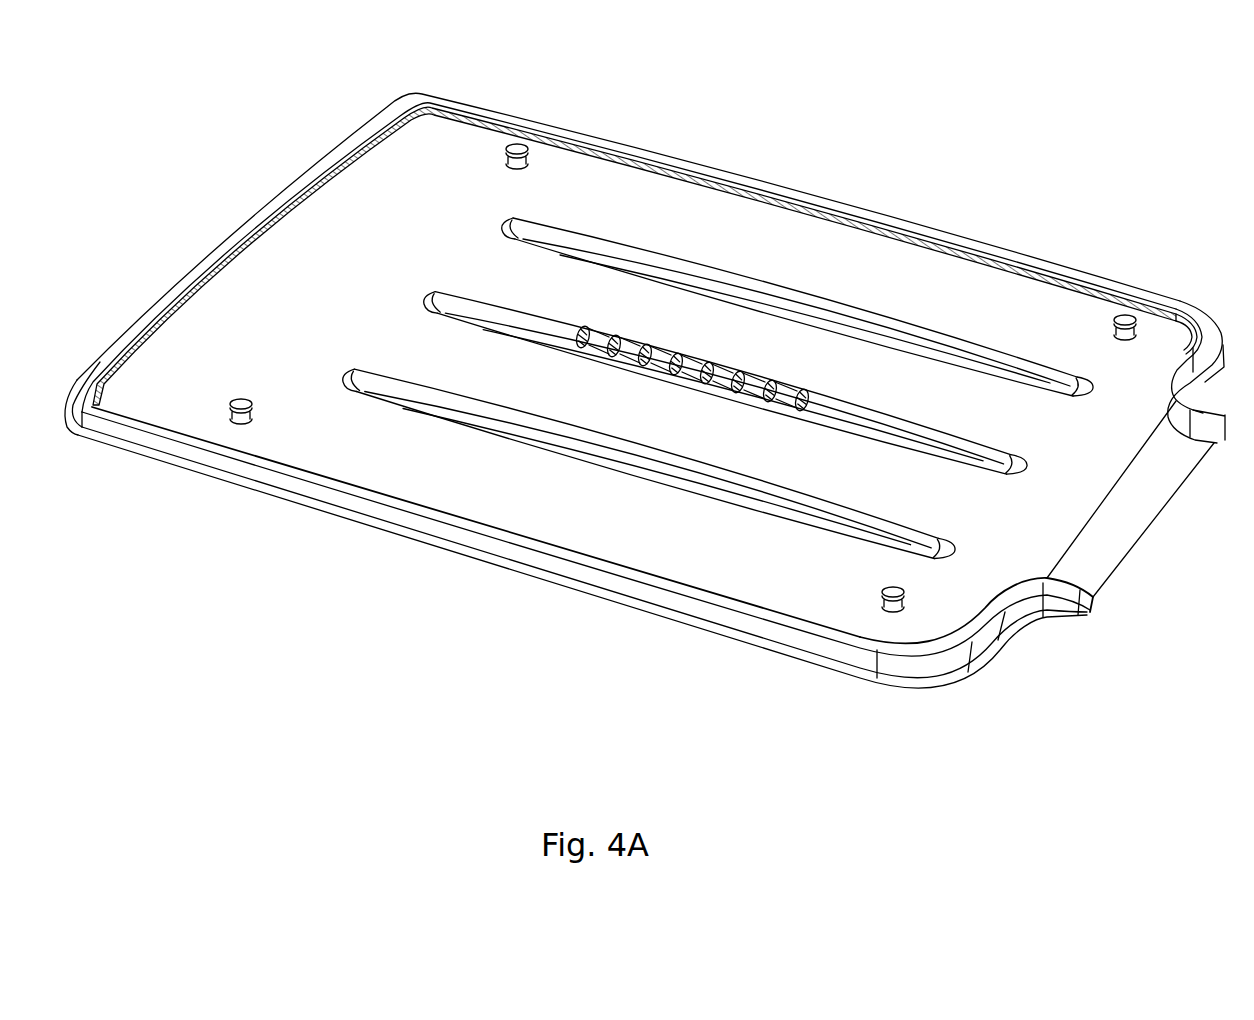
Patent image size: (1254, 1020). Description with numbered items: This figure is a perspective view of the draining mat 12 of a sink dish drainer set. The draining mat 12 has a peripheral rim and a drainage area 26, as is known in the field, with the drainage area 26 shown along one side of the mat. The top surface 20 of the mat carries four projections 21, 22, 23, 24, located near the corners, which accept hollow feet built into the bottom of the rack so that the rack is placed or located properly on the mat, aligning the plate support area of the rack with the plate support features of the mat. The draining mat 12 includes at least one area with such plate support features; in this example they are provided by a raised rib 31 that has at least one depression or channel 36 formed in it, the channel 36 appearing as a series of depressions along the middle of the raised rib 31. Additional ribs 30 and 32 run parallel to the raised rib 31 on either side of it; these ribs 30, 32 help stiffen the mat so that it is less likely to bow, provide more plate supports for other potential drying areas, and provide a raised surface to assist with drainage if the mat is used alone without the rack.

The draining mat 12 is at (248, 507).
The top surface 20 is at (371, 249).
The projection 21 is at (522, 142).
The projection 22 is at (1131, 314).
The projection 23 is at (884, 587).
The projection 24 is at (236, 400).
The drainage area 26 is at (1130, 543).
The rib 30 is at (540, 222).
The raised rib 31 is at (453, 296).
The rib 32 is at (390, 373).
The channel 36 is at (686, 348).